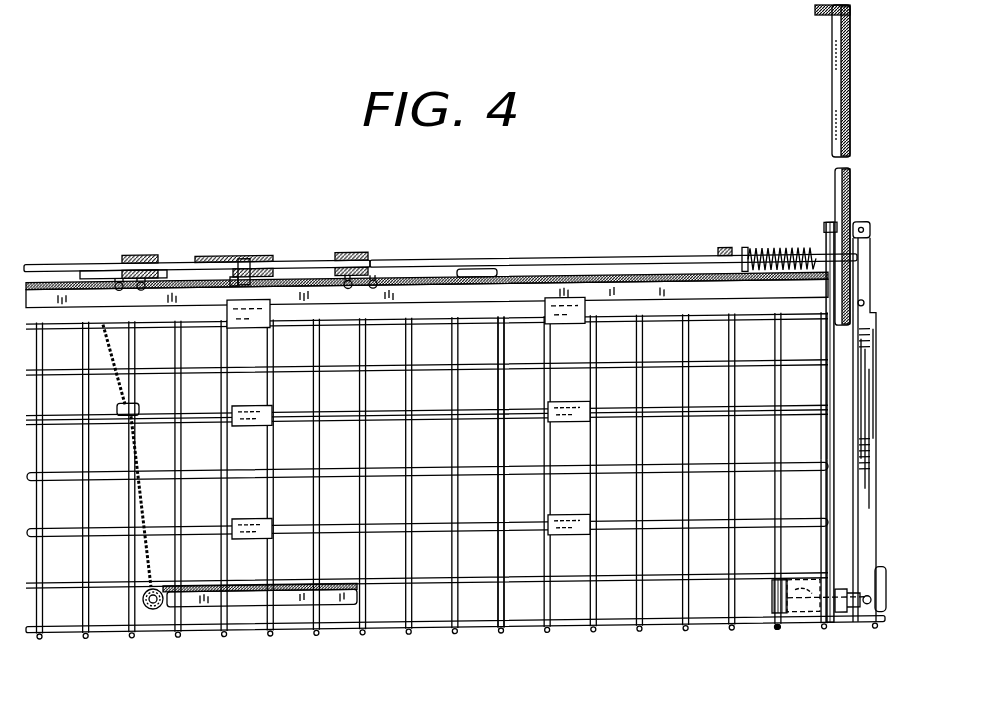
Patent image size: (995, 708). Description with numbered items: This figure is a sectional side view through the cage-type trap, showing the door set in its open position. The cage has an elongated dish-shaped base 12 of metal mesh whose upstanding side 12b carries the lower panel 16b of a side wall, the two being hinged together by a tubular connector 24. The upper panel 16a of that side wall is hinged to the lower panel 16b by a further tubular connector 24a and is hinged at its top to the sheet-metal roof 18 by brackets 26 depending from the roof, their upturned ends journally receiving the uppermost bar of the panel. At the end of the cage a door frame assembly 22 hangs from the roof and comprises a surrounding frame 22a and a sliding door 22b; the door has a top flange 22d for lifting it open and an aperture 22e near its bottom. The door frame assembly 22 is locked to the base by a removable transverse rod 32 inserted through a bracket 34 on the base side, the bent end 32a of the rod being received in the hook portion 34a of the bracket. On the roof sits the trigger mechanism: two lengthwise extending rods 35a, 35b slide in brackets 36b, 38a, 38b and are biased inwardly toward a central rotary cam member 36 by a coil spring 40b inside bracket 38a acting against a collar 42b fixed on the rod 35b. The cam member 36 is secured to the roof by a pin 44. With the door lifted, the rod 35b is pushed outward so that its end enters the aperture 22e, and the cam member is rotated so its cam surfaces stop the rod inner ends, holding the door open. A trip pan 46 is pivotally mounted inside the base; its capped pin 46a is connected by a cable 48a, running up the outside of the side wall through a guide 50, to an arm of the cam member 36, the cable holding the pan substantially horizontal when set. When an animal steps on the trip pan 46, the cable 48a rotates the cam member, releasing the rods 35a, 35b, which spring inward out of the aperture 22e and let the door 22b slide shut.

The base 12 is at (426, 634).
The upstanding side of base 12b is at (524, 592).
The upper panel of side wall 16a is at (820, 350).
The lower panel of side wall 16b is at (820, 507).
The roof 18 is at (572, 267).
The door frame assembly 22 is at (875, 566).
The surrounding frame 22a is at (826, 229).
The sliding door 22b is at (834, 90).
The top flange 22d is at (815, 11).
The aperture 22e is at (837, 222).
The tubular connector 24 is at (268, 527).
The further tubular connector 24a is at (243, 412).
The bracket 26 is at (262, 305).
The removable transverse rod 32 is at (866, 606).
The bent end of rod 32a is at (797, 614).
The bracket on base side 34 is at (769, 575).
The hook portion 34a is at (775, 632).
The lengthwise extending rod 35a is at (47, 263).
The lengthwise extending rod 35b is at (458, 262).
The central rotary cam member 36 is at (206, 258).
The bracket 36b is at (150, 256).
The bracket 38a is at (722, 252).
The bracket 38b is at (345, 255).
The coil spring 40b is at (752, 250).
The collar 42b is at (744, 255).
The pin 44 is at (247, 261).
The trip pan 46 is at (208, 610).
The capped pin 46a is at (146, 607).
The cable 48a is at (108, 357).
The guide 50 is at (140, 411).